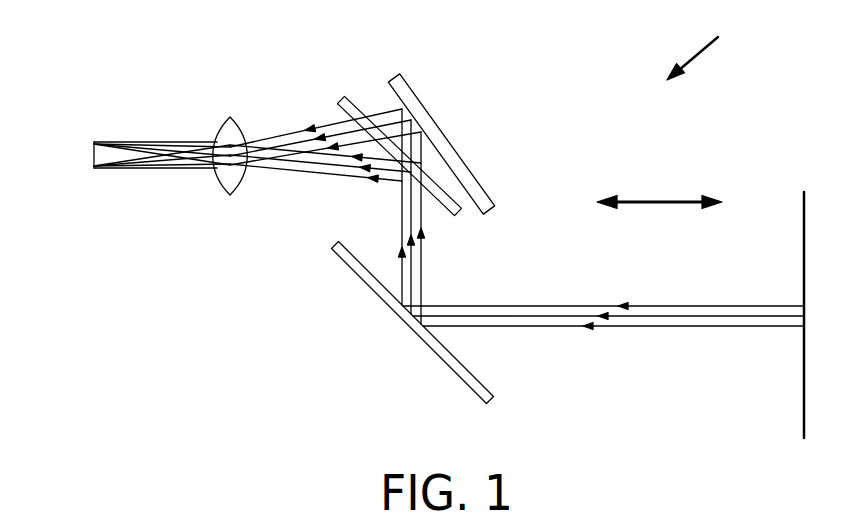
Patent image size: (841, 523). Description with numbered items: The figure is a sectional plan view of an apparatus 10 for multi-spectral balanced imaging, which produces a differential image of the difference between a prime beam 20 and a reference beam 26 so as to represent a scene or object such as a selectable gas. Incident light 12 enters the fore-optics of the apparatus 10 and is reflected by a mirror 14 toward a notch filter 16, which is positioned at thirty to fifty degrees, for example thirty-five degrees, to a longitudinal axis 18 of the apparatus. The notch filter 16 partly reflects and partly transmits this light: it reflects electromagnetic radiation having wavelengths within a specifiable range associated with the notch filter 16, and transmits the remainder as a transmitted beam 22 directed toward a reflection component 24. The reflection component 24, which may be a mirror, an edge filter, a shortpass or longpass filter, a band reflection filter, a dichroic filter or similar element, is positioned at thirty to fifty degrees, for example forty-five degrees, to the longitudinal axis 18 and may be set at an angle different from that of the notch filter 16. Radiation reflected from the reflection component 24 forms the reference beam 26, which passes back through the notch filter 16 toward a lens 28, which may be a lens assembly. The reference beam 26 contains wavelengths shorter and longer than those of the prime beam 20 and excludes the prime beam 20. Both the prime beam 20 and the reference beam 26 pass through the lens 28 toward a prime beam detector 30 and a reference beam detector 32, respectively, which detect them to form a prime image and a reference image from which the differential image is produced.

The apparatus 10 is at (716, 41).
The incident light 12 is at (672, 305).
The mirror 14 is at (357, 273).
The notch filter 16 is at (455, 214).
The longitudinal axis 18 is at (665, 202).
The prime beam 20 is at (310, 178).
The transmitted beam 22 is at (423, 165).
The reflection component 24 is at (487, 195).
The reference beam 26 is at (382, 110).
The lens 28 is at (240, 131).
The prime beam detector 30 is at (94, 162).
The reference beam detector 32 is at (94, 148).